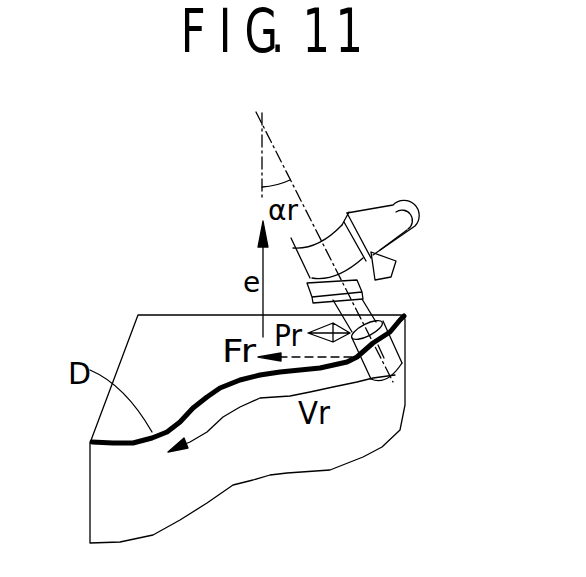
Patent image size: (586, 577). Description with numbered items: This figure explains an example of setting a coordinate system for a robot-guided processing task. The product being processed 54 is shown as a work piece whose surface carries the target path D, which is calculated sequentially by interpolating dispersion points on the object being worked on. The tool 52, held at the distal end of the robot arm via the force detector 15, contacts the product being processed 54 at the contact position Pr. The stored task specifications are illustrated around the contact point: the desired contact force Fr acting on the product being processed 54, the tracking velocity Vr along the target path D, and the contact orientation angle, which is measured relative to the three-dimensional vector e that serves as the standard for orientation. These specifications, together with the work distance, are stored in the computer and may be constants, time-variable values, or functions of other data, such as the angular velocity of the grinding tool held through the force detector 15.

The force detector 15 is at (367, 228).
The tool 52 is at (405, 362).
The product being processed 54 is at (108, 495).